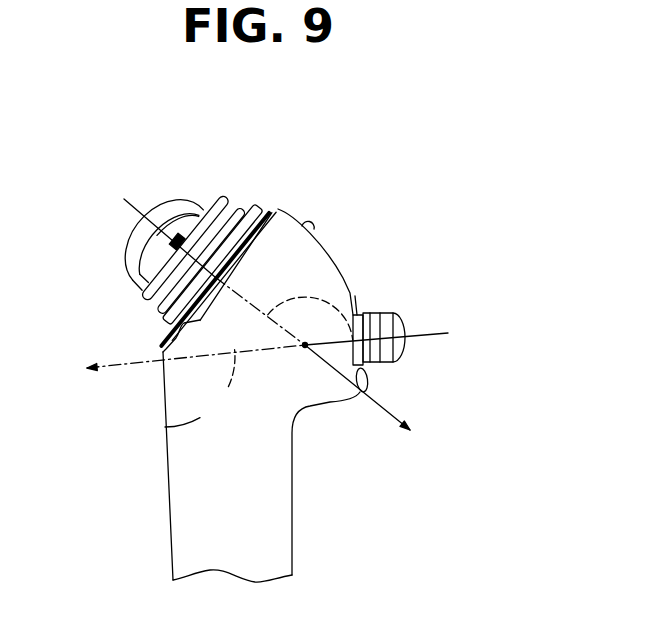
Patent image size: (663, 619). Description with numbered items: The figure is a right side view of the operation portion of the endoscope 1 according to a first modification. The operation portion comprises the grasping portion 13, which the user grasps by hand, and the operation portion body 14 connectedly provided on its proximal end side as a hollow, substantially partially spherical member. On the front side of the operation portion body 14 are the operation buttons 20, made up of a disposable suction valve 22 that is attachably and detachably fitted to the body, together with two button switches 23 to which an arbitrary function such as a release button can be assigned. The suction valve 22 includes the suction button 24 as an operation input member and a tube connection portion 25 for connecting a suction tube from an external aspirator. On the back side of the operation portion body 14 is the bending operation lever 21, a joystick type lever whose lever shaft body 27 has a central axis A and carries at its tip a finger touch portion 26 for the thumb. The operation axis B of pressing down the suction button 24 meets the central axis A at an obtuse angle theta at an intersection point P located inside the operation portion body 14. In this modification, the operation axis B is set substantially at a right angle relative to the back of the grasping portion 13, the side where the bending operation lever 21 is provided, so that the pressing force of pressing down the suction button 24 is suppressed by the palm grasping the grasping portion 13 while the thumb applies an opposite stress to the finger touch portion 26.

The endoscope 1 is at (231, 170).
The grasping portion 13 is at (165, 457).
The operation portion body 14 is at (287, 212).
The operation buttons 20 is at (477, 454).
The bending operation lever 21 is at (192, 205).
The suction valve 22 is at (404, 310).
The button switches 23 is at (366, 384).
The suction button 24 is at (404, 355).
The tube connection portion 25 is at (312, 219).
The finger touch portion 26 is at (133, 269).
The lever shaft body 27 is at (180, 236).